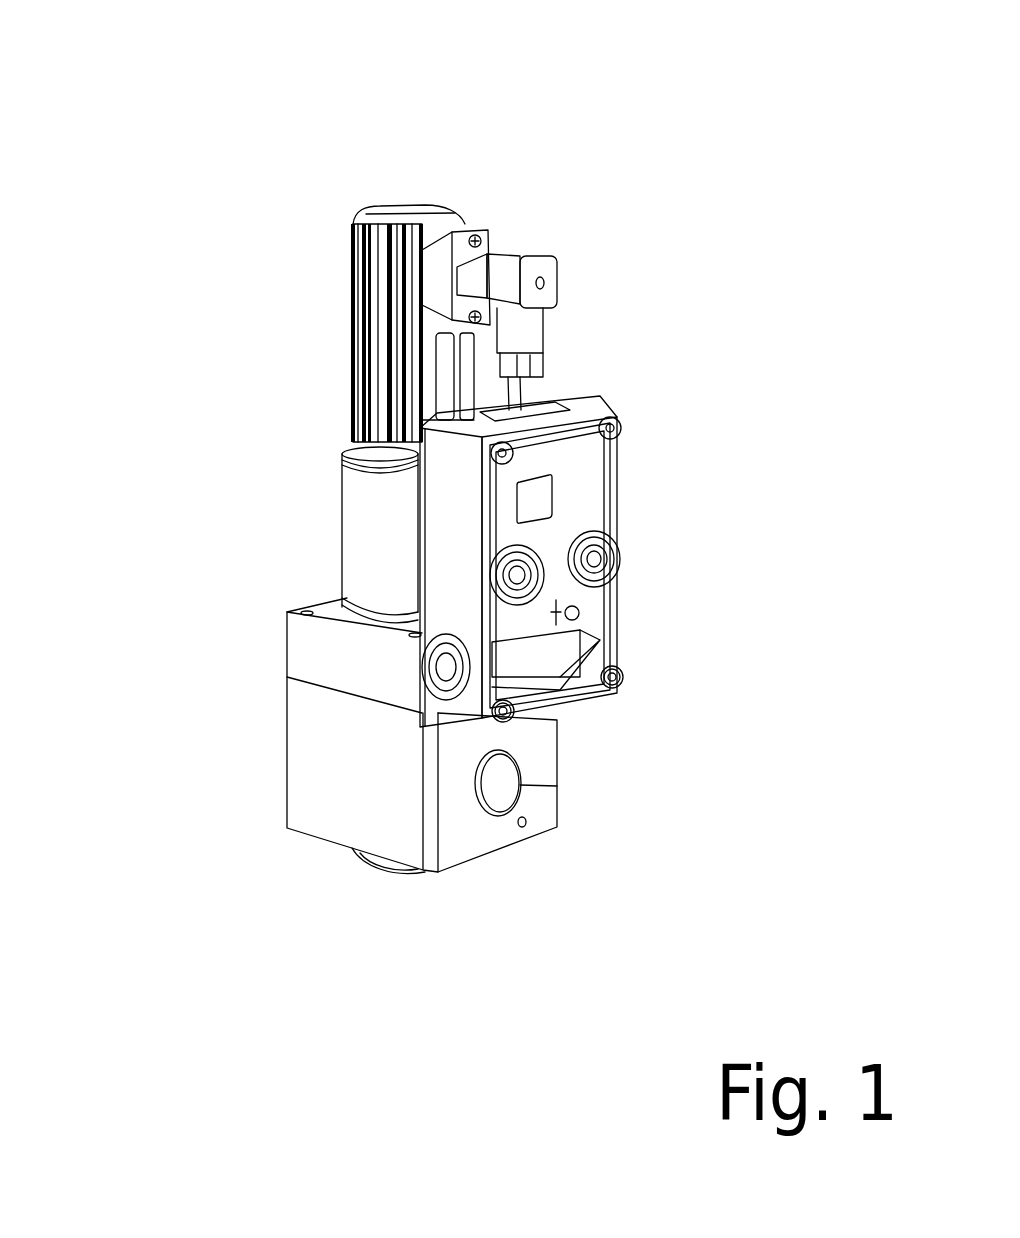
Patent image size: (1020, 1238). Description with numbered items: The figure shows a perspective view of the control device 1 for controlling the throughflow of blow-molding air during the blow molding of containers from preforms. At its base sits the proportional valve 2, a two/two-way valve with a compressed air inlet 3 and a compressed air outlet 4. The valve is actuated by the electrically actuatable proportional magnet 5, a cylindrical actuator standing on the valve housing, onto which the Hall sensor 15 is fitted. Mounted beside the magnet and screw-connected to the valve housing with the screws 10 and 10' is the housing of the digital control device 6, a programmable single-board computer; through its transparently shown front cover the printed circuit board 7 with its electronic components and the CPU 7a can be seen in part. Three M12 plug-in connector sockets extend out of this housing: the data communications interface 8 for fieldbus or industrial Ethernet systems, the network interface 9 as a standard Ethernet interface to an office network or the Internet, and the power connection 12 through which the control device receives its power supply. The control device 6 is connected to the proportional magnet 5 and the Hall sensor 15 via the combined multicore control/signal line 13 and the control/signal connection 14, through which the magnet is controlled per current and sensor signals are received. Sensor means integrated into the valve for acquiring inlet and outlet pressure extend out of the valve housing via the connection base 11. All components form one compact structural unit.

The control device 1 is at (294, 182).
The proportional valve 2 is at (290, 745).
The compressed air inlet 3 is at (522, 782).
The compressed air outlet 4 is at (383, 870).
The proportional magnet 5 is at (440, 553).
The digital control device 6 is at (612, 505).
The printed circuit board 7 is at (505, 500).
The CPU 7a is at (553, 480).
The data communications interface 8 is at (545, 582).
The network interface 9 is at (440, 672).
The screw 10 is at (703, 677).
The screw 10' is at (656, 736).
The connection base 11 is at (425, 587).
The power connection 12 is at (612, 553).
The control/signal line 13 is at (535, 383).
The control/signal connection 14 is at (515, 252).
The Hall sensor 15 is at (353, 287).